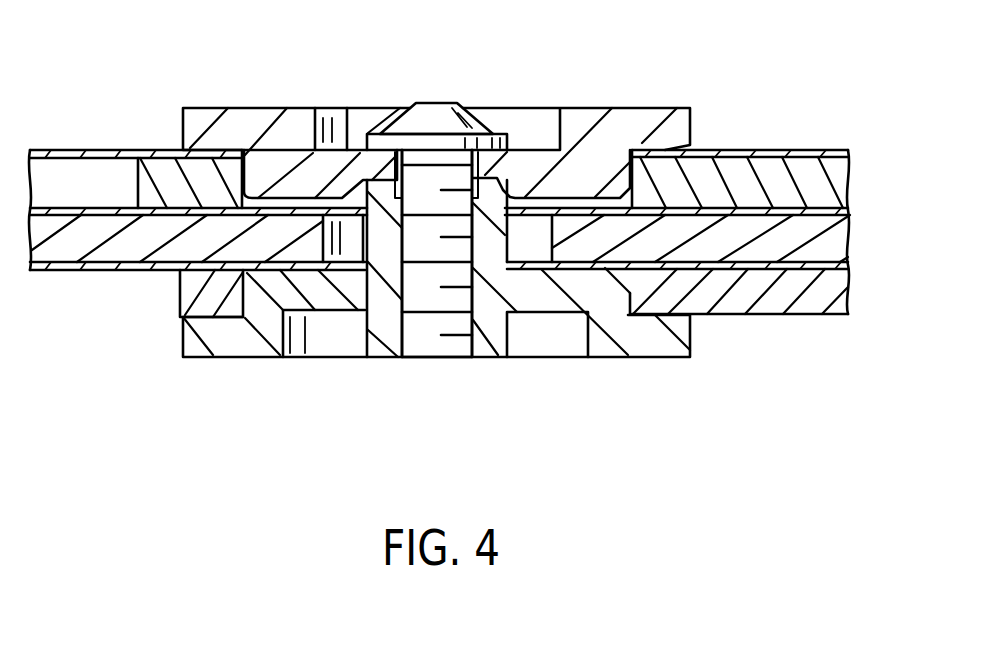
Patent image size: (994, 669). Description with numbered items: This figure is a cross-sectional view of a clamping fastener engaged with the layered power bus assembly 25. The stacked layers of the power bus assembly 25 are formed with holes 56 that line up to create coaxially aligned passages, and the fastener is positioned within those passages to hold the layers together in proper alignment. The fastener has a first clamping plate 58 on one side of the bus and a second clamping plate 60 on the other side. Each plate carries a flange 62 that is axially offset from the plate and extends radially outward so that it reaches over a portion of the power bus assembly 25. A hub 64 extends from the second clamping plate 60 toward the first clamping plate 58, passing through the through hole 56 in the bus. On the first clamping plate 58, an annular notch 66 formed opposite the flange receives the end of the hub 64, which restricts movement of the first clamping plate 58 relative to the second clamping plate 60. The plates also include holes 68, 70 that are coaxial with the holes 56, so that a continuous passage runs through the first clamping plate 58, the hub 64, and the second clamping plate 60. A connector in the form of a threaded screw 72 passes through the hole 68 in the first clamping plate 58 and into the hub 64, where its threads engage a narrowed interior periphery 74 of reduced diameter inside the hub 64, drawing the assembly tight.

The power bus assembly 25 is at (752, 58).
The hole 56 is at (385, 235).
The first clamping plate 58 is at (349, 150).
The second clamping plate 60 is at (542, 313).
The flange 62 is at (155, 108).
The hub 64 is at (388, 235).
The annular notch 66 is at (512, 170).
The hole 68 is at (410, 159).
The hole 70 is at (433, 283).
The threaded screw 72 is at (435, 253).
The narrowed interior periphery 74 is at (463, 323).